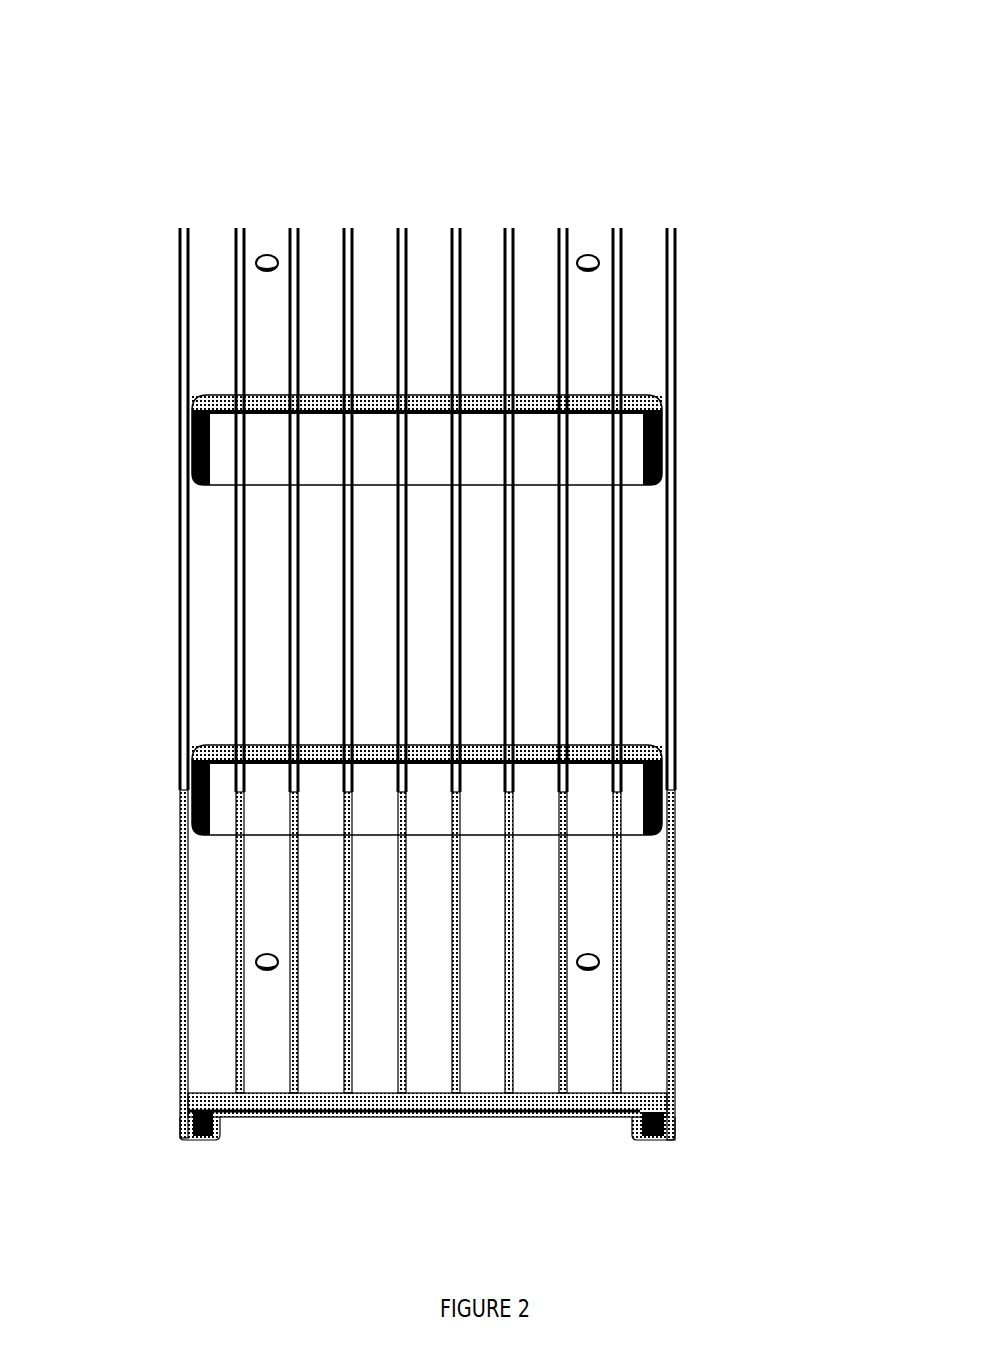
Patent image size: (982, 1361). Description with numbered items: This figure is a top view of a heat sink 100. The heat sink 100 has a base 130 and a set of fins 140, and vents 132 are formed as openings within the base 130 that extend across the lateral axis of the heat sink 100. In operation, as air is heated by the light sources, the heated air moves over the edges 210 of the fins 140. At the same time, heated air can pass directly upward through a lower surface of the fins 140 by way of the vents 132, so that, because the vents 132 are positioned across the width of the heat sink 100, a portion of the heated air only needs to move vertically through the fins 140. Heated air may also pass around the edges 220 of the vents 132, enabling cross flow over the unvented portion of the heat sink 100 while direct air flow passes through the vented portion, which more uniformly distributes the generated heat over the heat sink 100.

The heat sink 100 is at (140, 79).
The base 130 is at (598, 622).
The vents 132 is at (523, 462).
The fins 140 is at (507, 310).
The edges of the fins 210 is at (183, 608).
The edges of vents 220 is at (372, 828).